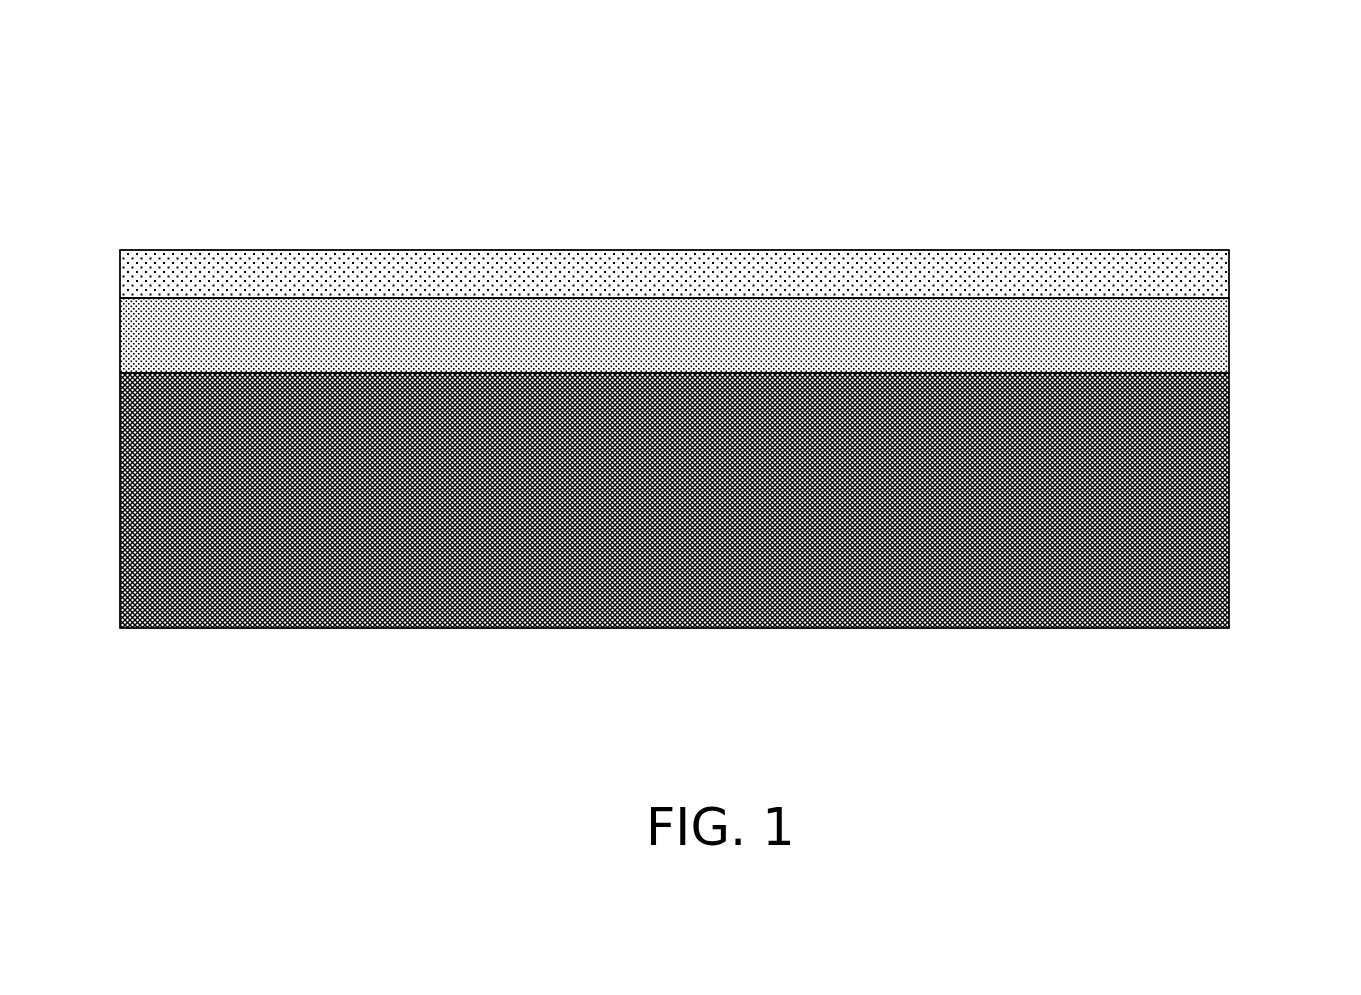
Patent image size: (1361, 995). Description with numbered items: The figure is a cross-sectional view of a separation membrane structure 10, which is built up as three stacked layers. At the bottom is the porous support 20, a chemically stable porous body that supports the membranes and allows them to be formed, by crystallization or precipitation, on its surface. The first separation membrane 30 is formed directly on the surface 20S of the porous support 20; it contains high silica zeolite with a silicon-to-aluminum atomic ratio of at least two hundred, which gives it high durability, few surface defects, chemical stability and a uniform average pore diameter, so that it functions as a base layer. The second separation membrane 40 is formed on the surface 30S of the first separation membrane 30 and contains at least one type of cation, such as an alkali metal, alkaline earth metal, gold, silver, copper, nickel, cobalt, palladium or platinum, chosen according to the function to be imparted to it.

The separation membrane structure 10 is at (709, 337).
The porous support 20 is at (1229, 460).
The surface of the porous support 20S is at (138, 372).
The first separation membrane 30 is at (1229, 345).
The surface of the first separation membrane 30S is at (138, 295).
The second separation membrane 40 is at (1229, 272).